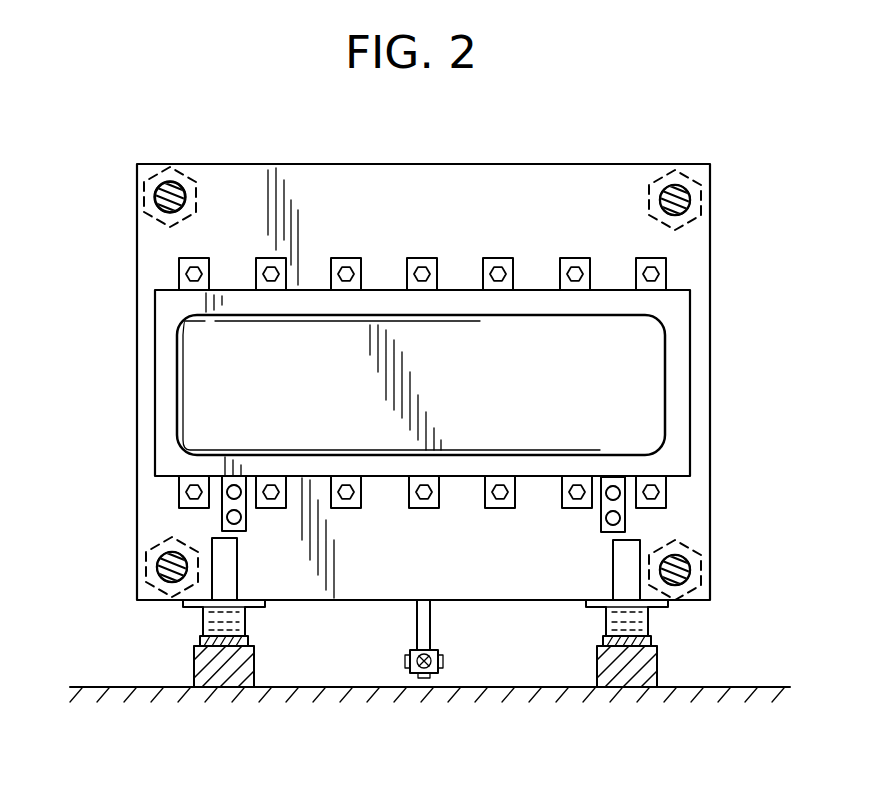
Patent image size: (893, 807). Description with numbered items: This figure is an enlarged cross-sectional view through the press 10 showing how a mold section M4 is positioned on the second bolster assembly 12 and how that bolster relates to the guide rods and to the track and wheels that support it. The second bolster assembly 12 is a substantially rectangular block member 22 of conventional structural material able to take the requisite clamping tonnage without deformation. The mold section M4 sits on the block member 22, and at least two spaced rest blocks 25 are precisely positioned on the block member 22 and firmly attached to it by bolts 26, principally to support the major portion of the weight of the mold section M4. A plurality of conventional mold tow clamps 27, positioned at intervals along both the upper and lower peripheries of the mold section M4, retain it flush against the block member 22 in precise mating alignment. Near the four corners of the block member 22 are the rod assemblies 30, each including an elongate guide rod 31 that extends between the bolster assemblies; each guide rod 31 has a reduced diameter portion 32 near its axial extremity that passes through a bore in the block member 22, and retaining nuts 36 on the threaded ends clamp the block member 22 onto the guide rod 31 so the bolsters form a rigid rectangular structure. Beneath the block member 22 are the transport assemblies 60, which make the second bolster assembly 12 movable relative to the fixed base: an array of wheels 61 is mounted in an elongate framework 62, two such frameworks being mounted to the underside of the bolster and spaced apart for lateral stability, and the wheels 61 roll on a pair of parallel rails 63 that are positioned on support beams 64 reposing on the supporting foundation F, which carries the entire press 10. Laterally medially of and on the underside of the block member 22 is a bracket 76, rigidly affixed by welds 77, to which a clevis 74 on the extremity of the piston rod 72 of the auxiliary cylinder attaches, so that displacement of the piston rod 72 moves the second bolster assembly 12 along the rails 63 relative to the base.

The press 10 is at (622, 95).
The second bolster assembly 12 is at (293, 160).
The block member 22 is at (593, 177).
The rest blocks 25 is at (212, 480).
The bolts 26 is at (240, 521).
The mold tow clamps 27 is at (417, 258).
The rod assemblies 30 is at (150, 204).
The guide rod 31 is at (180, 193).
The reduced diameter portion 32 is at (196, 185).
The retaining nuts 36 is at (184, 178).
The transport assemblies 60 is at (190, 627).
The wheels 61 is at (196, 655).
The framework 62 is at (246, 620).
The rails 63 is at (235, 688).
The support beams 64 is at (215, 690).
The piston rod 72 is at (437, 665).
The clevis 74 is at (412, 668).
The bracket 76 is at (430, 630).
The welds 77 is at (415, 605).
The mold section M4 is at (678, 378).
The foundation F is at (740, 685).